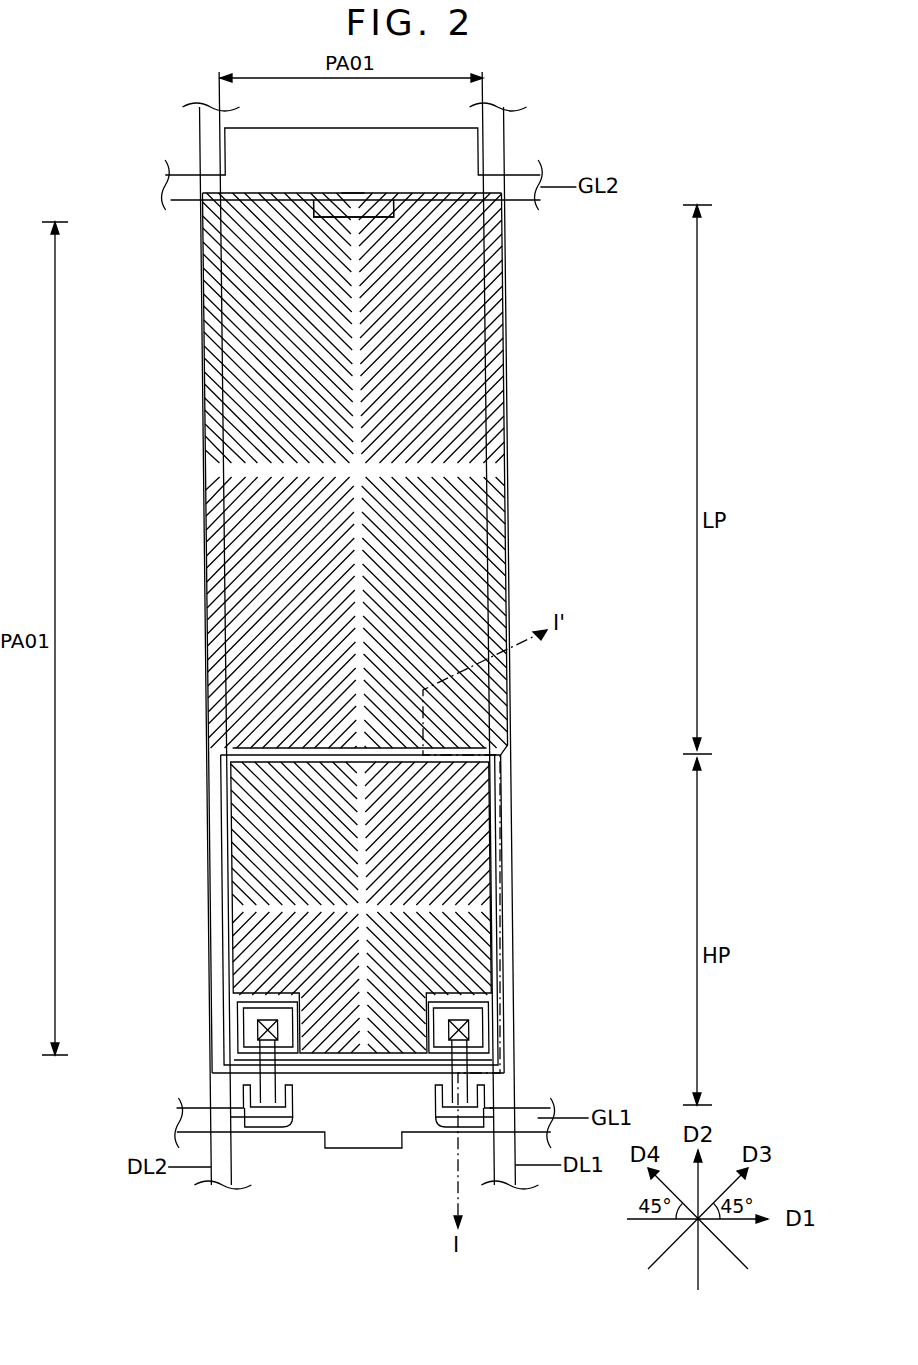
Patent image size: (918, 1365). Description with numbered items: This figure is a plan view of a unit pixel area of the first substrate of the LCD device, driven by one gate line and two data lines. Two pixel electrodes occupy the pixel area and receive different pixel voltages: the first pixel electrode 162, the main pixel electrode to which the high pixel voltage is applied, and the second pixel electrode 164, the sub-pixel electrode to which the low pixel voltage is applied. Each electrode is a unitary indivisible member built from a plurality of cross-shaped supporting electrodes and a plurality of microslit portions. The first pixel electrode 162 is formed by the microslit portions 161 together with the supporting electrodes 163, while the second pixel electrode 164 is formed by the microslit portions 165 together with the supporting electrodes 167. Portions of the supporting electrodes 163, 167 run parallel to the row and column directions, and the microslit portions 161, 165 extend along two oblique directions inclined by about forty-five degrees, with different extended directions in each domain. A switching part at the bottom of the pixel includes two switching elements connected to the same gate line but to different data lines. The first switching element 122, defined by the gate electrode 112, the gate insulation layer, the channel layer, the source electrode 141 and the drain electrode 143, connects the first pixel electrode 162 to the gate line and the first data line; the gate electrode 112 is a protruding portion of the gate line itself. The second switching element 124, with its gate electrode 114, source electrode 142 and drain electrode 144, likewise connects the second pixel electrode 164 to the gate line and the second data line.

The microslit portions 161 is at (494, 283).
The first pixel electrode 162 is at (426, 633).
The supporting electrodes 163 is at (355, 336).
The second pixel electrode 164 is at (293, 914).
The microslit portions 165 is at (229, 867).
The supporting electrodes 167 is at (232, 907).
The second switching element 124 is at (190, 1064).
The drain electrode 144 is at (257, 1080).
The gate electrode 114 is at (225, 1095).
The source electrode 142 is at (222, 1108).
The first switching element 122 is at (538, 1064).
The drain electrode 143 is at (452, 1080).
The gate electrode 112 is at (480, 1090).
The source electrode 141 is at (473, 1108).